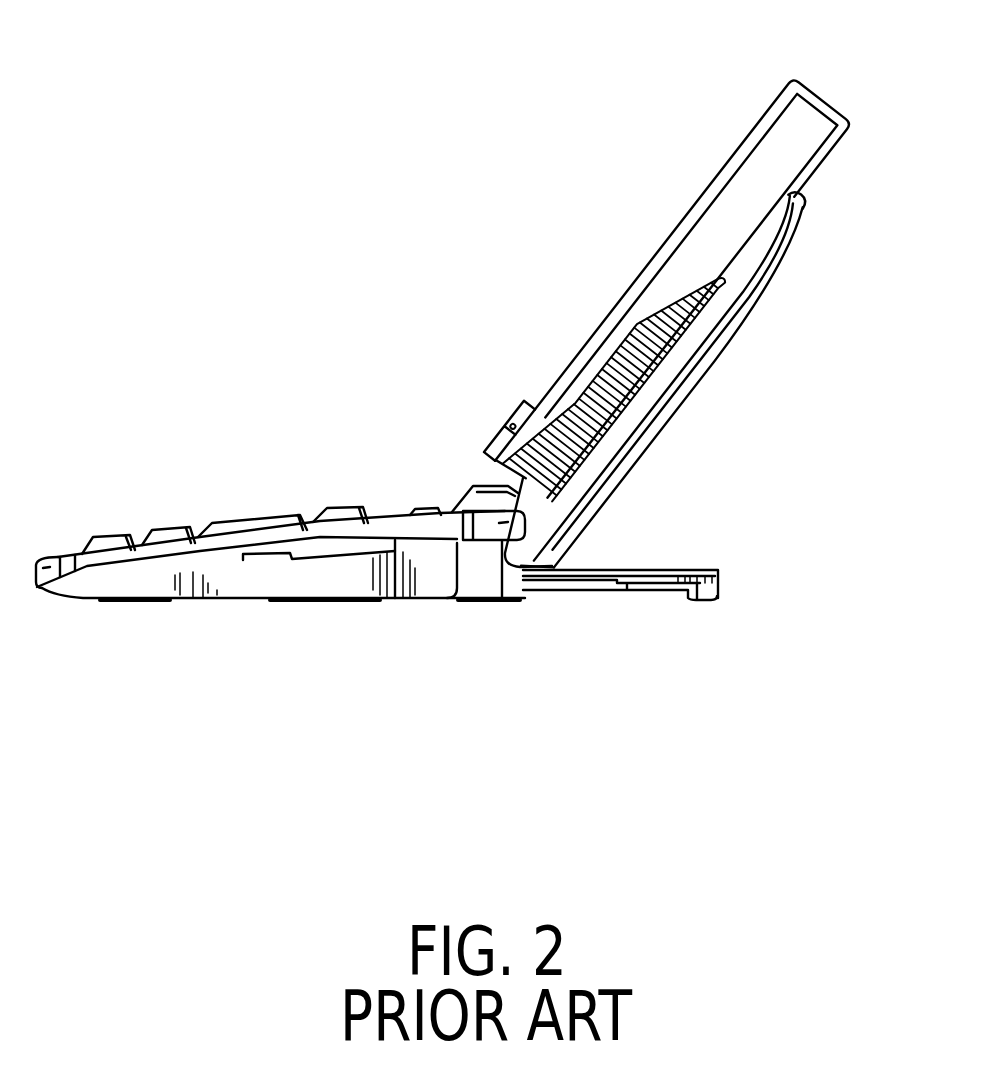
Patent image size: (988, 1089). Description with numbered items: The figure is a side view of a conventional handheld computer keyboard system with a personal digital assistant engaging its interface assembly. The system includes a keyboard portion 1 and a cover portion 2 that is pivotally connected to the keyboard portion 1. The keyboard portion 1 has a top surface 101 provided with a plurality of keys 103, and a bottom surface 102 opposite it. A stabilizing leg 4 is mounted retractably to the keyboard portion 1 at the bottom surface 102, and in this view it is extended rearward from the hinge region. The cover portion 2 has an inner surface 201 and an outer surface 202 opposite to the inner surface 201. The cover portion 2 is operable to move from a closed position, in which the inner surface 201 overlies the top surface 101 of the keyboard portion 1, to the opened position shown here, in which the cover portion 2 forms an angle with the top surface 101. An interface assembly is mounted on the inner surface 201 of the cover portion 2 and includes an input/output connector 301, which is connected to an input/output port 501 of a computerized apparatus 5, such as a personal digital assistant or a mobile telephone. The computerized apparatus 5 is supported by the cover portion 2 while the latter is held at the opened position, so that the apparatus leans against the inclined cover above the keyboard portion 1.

The keyboard portion 1 is at (239, 612).
The top surface 101 is at (64, 552).
The bottom surface 102 is at (84, 600).
The keys 103 is at (248, 516).
The cover portion 2 is at (790, 252).
The inner surface 201 is at (753, 233).
The outer surface 202 is at (723, 342).
The input/output connector 301 is at (495, 456).
The input/output port 501 is at (495, 456).
The stabilizing leg 4 is at (653, 615).
The computerized apparatus 5 is at (742, 137).